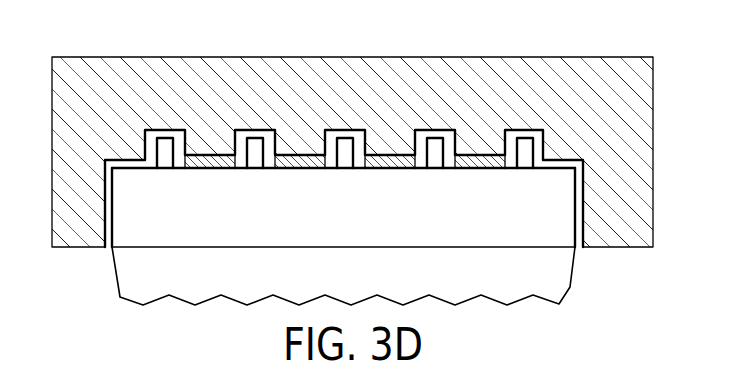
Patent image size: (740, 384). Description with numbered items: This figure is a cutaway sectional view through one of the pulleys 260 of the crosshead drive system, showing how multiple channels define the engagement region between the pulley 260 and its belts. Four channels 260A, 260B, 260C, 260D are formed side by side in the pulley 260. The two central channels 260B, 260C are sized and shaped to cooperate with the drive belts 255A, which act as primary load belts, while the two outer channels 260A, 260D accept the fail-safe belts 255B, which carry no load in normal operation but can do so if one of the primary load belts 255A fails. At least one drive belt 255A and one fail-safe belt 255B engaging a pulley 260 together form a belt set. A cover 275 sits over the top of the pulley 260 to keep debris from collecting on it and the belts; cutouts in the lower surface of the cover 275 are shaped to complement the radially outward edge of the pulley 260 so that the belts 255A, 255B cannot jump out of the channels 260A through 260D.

The cover 275 is at (82, 62).
The drive belts 255A is at (307, 156).
The fail-safe belts 255B is at (220, 156).
The pulley 260 is at (562, 284).
The channel 260A is at (207, 170).
The channel 260B is at (302, 170).
The channel 260C is at (385, 170).
The channel 260D is at (477, 170).